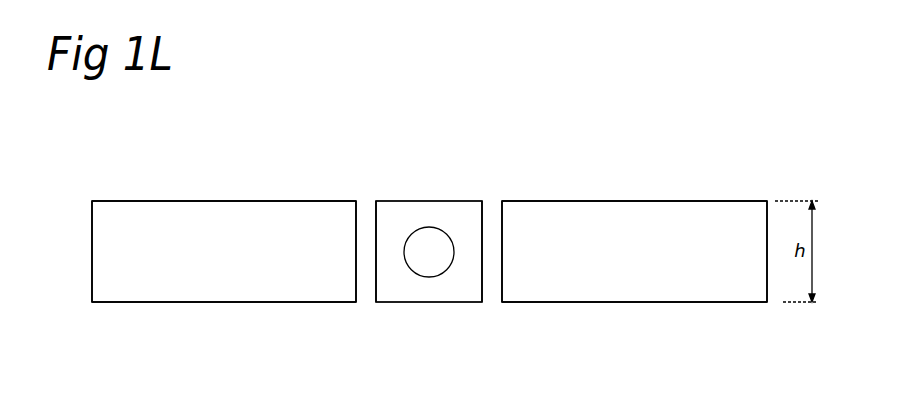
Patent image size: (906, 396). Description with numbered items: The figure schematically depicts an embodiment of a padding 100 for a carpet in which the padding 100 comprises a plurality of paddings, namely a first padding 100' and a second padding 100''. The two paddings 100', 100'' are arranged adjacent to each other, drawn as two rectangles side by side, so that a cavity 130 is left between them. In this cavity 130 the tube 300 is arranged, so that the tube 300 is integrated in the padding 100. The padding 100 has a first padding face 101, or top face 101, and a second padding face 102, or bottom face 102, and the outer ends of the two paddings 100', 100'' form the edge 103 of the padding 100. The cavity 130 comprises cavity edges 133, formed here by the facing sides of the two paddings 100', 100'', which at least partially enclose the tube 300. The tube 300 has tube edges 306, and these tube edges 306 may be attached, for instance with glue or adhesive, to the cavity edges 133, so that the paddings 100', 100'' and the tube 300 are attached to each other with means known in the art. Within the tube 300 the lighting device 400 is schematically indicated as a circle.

The padding 100 is at (430, 177).
The padding 100' is at (224, 213).
The padding 100'' is at (642, 213).
The first padding face 101 is at (229, 200).
The second padding face 102 is at (213, 303).
The edge 103 is at (92, 243).
The cavity 130 is at (366, 288).
The cavity edge 133 is at (556, 345).
The tube 300 is at (426, 306).
The tube edge 306 is at (376, 243).
The lighting device 400 is at (428, 248).